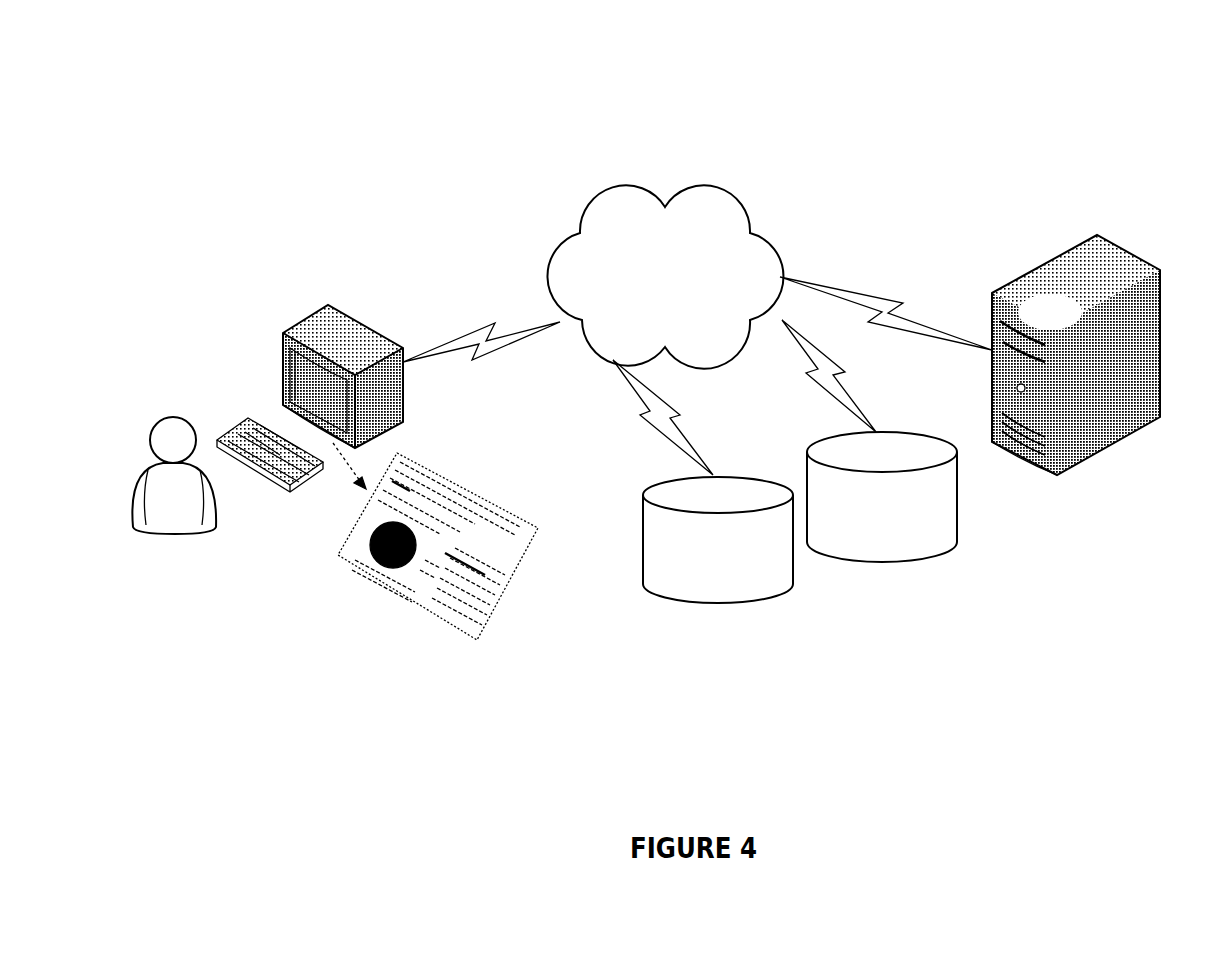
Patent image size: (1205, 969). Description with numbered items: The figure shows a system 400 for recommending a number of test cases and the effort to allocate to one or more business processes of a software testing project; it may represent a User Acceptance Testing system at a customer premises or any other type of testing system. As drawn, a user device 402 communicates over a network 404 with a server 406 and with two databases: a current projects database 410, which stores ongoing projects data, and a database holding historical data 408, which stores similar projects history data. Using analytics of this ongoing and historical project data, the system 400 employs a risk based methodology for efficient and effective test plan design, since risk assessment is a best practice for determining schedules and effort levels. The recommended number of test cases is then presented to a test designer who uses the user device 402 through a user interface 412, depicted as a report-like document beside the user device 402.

The system 400 is at (1058, 98).
The user device 402 is at (333, 283).
The network 404 is at (680, 266).
The server 406 is at (1137, 217).
The historical data database 408 is at (862, 550).
The current projects database 410 is at (699, 592).
The user interface 412 is at (497, 483).